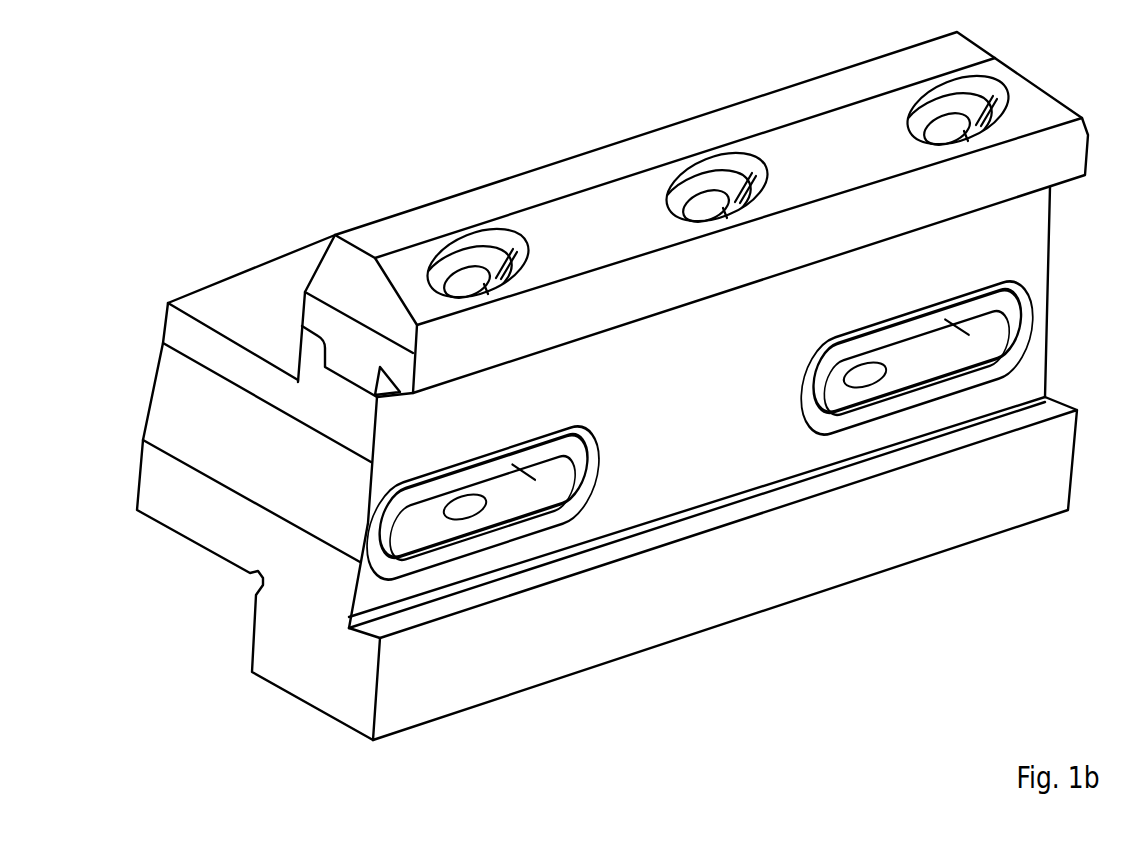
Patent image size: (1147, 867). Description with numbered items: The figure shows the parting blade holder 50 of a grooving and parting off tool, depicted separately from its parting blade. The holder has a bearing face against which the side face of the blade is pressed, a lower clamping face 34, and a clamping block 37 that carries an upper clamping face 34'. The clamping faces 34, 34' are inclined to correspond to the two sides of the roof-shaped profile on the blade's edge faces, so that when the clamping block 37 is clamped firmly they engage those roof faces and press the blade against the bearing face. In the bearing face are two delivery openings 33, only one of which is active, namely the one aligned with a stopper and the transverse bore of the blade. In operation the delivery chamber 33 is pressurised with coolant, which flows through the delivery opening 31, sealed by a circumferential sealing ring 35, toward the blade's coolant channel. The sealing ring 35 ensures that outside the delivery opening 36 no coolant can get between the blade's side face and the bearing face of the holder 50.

The delivery opening 31 is at (557, 470).
The delivery opening 33 is at (510, 495).
The clamping face 34 is at (713, 568).
The upper clamping face 34' is at (371, 269).
The circumferential sealing ring 35 is at (443, 555).
The delivery opening 36 is at (503, 553).
The clamping block 37 is at (613, 230).
The parting blade holder 50 is at (243, 528).